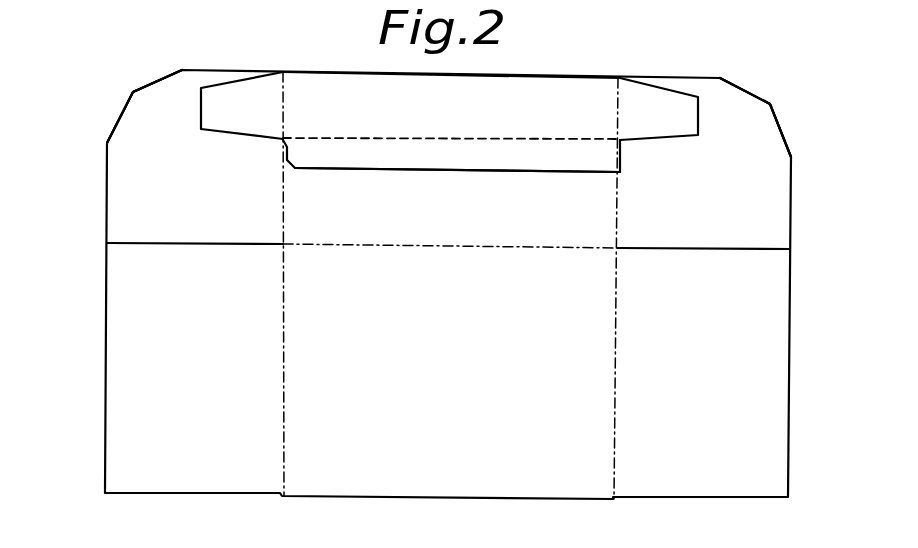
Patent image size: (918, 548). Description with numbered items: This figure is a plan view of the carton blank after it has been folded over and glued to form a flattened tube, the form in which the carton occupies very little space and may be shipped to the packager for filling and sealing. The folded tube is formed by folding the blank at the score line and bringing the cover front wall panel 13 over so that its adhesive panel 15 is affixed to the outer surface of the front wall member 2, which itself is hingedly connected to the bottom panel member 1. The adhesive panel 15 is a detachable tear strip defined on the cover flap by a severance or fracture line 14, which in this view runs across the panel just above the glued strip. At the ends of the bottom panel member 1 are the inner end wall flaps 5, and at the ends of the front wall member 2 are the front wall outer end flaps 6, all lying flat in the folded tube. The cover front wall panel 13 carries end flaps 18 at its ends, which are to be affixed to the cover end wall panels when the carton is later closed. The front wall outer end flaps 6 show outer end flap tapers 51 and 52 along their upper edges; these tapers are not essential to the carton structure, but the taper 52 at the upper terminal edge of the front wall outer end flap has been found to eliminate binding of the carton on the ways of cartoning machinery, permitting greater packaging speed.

The bottom panel member 1 is at (452, 385).
The front wall member 2 is at (410, 213).
The inner end wall flaps 5 is at (198, 377).
The front wall outer end flaps 6 is at (201, 191).
The cover front wall panel 13 is at (402, 111).
The severance or fracture line 14 is at (471, 135).
The adhesive panel 15 is at (496, 161).
The end flaps 18 is at (250, 114).
The outer end flap taper 51 is at (118, 115).
The outer end flap taper 52 is at (148, 83).